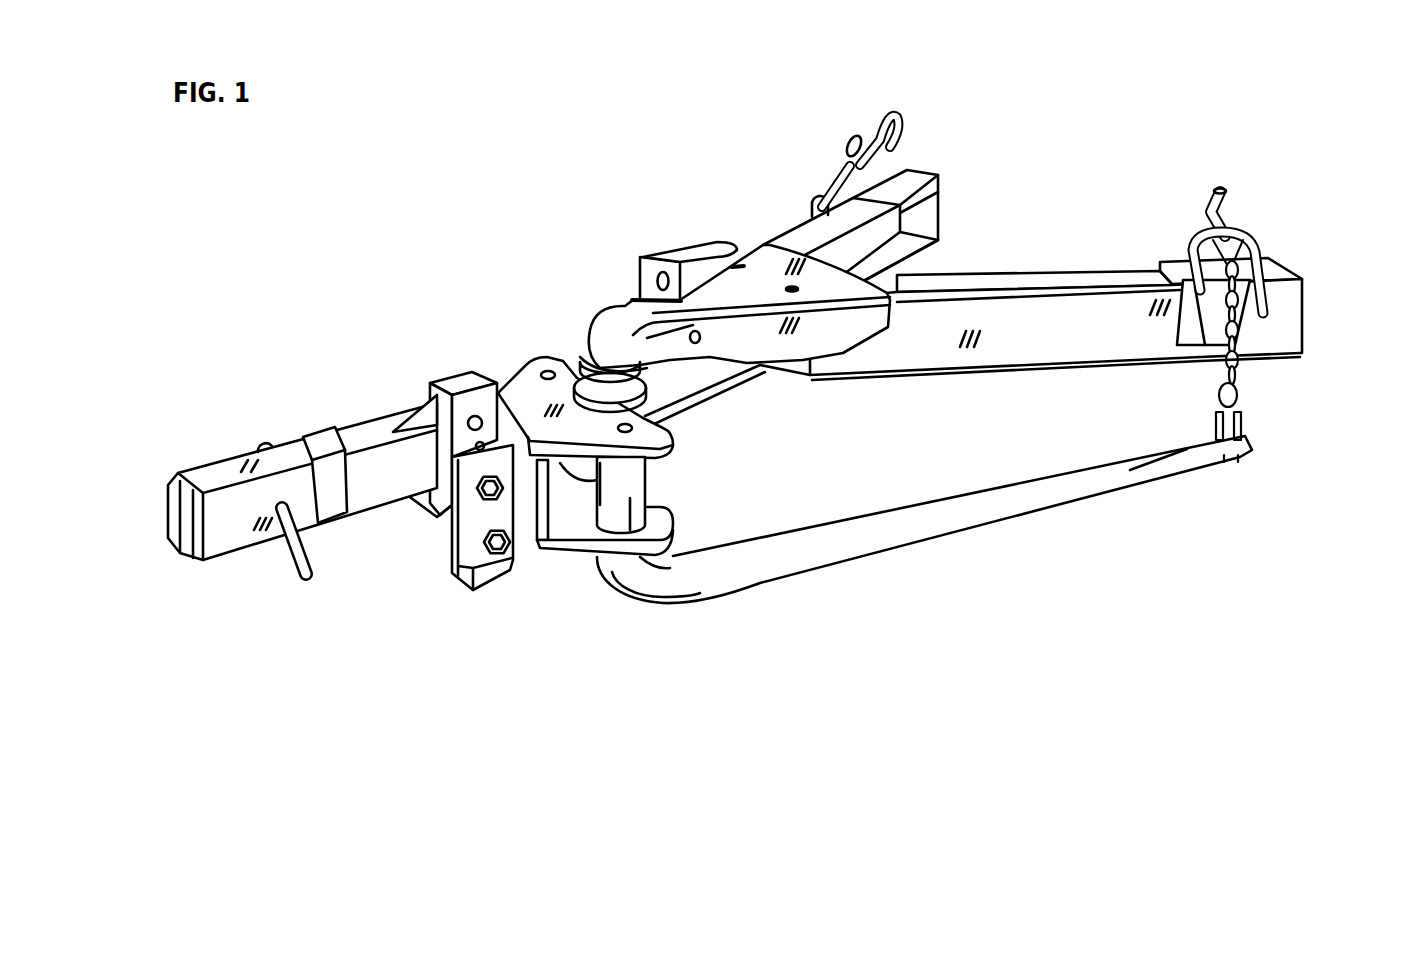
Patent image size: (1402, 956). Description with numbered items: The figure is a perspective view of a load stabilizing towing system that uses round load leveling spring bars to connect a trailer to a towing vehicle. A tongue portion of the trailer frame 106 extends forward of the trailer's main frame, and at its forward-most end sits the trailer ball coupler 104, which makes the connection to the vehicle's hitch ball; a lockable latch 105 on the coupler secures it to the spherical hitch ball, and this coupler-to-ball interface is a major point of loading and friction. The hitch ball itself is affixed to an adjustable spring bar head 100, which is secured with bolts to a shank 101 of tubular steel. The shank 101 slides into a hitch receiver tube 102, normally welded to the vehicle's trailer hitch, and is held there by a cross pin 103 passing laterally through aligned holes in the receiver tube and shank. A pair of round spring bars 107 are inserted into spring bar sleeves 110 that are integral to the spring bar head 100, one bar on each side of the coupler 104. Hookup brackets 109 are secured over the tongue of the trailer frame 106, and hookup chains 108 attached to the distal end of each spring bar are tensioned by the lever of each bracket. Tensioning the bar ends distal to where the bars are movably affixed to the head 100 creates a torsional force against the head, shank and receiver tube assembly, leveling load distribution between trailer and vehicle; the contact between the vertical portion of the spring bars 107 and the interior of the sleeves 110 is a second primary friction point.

The adjustable spring bar head 100 is at (515, 373).
The shank 101 is at (372, 424).
The hitch receiver tube 102 is at (220, 461).
The cross pin 103 is at (293, 570).
The trailer ball coupler 104 is at (594, 318).
The lockable latch 105 is at (697, 247).
The trailer frame 106 is at (1103, 367).
The round spring bars 107 is at (710, 420).
The hookup chains 108 is at (1245, 392).
The hookup brackets 109 is at (847, 150).
The spring bar sleeves 110 is at (647, 476).